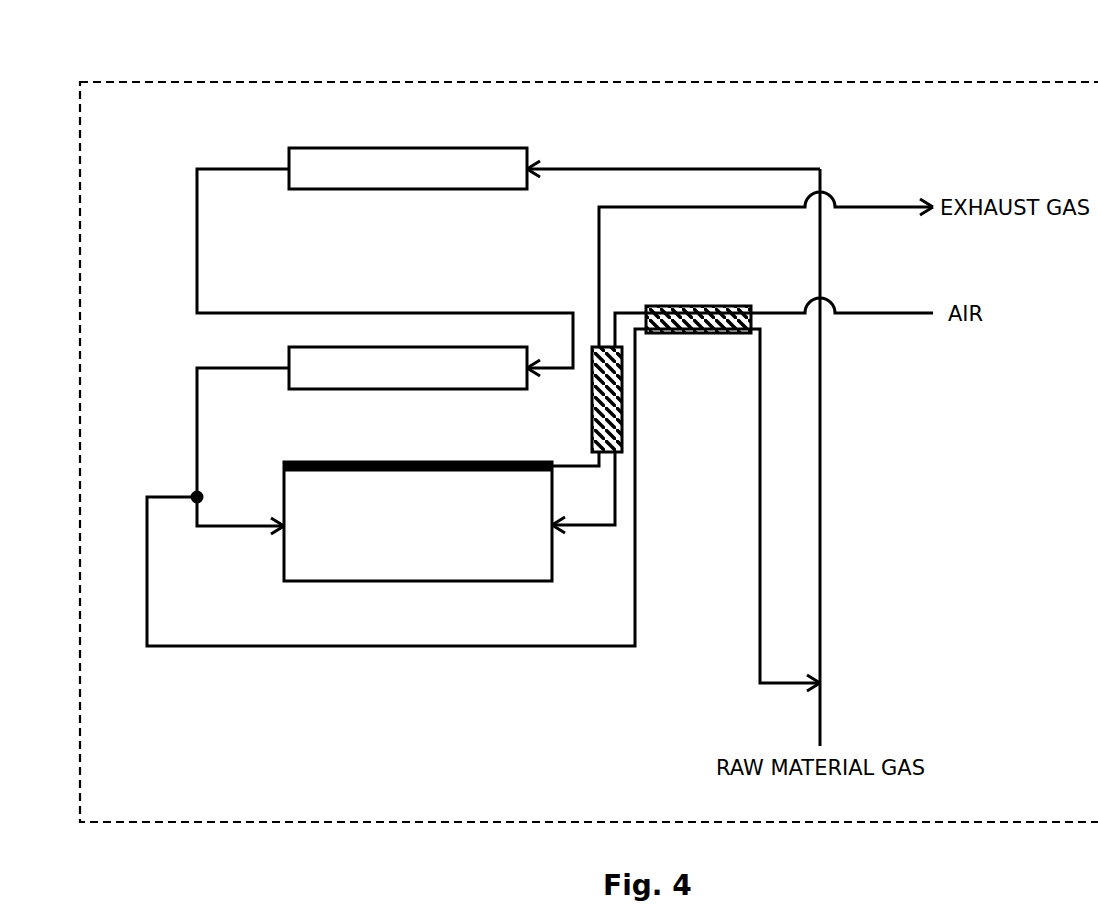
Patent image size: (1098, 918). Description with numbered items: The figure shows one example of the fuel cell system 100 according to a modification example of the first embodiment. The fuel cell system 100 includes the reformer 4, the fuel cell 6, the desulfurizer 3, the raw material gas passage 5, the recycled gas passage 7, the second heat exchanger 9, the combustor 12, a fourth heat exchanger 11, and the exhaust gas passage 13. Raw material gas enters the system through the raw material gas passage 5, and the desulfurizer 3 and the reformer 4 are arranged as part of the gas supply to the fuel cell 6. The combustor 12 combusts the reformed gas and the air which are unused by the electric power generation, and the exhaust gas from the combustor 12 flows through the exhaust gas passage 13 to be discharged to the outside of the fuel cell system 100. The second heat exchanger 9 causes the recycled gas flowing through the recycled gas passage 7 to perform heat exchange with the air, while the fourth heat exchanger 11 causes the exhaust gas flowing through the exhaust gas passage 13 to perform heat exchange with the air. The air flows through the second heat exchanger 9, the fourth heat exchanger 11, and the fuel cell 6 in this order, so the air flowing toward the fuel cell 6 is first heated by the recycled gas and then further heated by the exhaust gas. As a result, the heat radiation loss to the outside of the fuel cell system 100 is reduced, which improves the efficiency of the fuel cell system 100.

The fuel cell system 100 is at (602, 81).
The desulfurizer 3 is at (408, 168).
The reformer 4 is at (408, 368).
The raw material gas passage 5 is at (822, 590).
The fuel cell 6 is at (418, 521).
The recycled gas passage 7 is at (500, 647).
The second heat exchanger 9 is at (700, 305).
The fourth heat exchanger 11 is at (591, 411).
The combustor 12 is at (450, 461).
The exhaust gas passage 13 is at (870, 206).